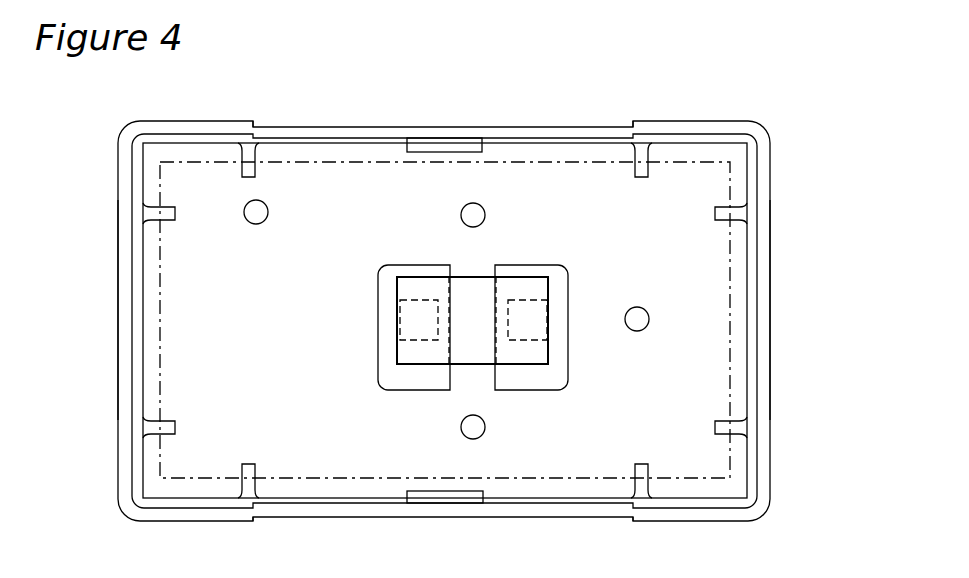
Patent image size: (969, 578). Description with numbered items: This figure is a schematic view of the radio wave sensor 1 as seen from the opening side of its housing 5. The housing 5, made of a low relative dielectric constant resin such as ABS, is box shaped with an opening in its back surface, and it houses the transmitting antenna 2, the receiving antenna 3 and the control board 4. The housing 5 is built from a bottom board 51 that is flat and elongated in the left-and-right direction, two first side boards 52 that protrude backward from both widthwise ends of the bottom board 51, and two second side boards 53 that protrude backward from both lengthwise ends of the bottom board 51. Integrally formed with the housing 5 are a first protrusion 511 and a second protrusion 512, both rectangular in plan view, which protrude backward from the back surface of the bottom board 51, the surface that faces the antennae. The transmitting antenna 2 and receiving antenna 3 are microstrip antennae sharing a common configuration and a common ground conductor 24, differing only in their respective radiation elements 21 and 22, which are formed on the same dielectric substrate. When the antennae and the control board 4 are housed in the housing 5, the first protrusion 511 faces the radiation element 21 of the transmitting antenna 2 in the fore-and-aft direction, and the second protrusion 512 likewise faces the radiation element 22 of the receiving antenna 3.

The radio wave sensor 1 is at (777, 116).
The transmitting antenna 2 is at (477, 357).
The receiving antenna 3 is at (526, 366).
The control board 4 is at (317, 162).
The housing 5 is at (774, 178).
The radiation element 21 is at (550, 305).
The radiation element 22 is at (400, 305).
The ground conductor 24 is at (425, 360).
The bottom board 51 is at (723, 490).
The first side board 52 is at (675, 128).
The second side board 53 is at (118, 302).
The first protrusion 511 is at (557, 377).
The second protrusion 512 is at (386, 377).